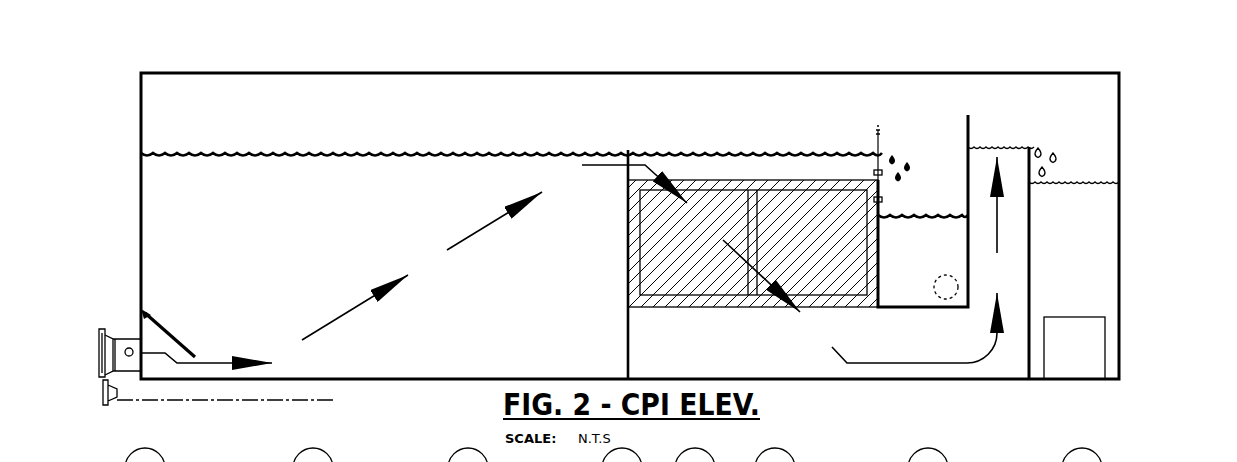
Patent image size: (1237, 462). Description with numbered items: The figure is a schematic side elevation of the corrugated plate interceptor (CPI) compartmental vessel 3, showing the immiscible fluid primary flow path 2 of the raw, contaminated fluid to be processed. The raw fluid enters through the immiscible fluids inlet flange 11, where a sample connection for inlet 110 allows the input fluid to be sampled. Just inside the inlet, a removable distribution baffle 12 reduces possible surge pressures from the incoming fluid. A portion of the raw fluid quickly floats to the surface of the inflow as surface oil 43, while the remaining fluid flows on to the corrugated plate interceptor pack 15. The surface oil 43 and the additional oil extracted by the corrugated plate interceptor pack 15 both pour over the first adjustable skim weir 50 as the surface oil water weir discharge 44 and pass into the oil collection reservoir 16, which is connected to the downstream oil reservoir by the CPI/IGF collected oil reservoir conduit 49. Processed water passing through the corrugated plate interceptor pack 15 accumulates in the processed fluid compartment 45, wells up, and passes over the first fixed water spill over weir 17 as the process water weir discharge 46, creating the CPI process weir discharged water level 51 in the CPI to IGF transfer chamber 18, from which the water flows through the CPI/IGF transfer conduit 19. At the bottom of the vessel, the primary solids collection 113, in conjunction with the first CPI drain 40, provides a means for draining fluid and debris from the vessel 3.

The corrugated plate interceptor (CPI) compartmental vessel 3 is at (691, 56).
The surface oil 43 is at (288, 152).
The removable distribution baffle 12 is at (173, 328).
The immiscible fluids inlet flange 11 is at (98, 352).
The sample connection for inlet 110 is at (129, 347).
The first (CPI) drain 40 is at (115, 401).
The primary solids collection 113 is at (290, 401).
The immiscible fluid primary flow path 2 is at (339, 323).
The corrugated plate interceptor pack 15 is at (778, 220).
The first adjustable skim weir 50 is at (883, 165).
The oil collection reservoir (CPI) 16 is at (917, 243).
The surface oil water weir discharge 44 is at (915, 157).
The CPI/IGF collected oil reservoir conduit 49 is at (947, 289).
The processed fluid compartment (CPI) 45 is at (1014, 337).
The first fixed water spill over weir (CPI) 17 is at (1030, 143).
The process water weir discharge #1 46 is at (1058, 157).
The CPI process weir discharged water level 51 is at (1108, 177).
The CPI to IGF transfer chamber 18 is at (1083, 228).
The CPI/IGF transfer conduit 19 is at (1087, 315).